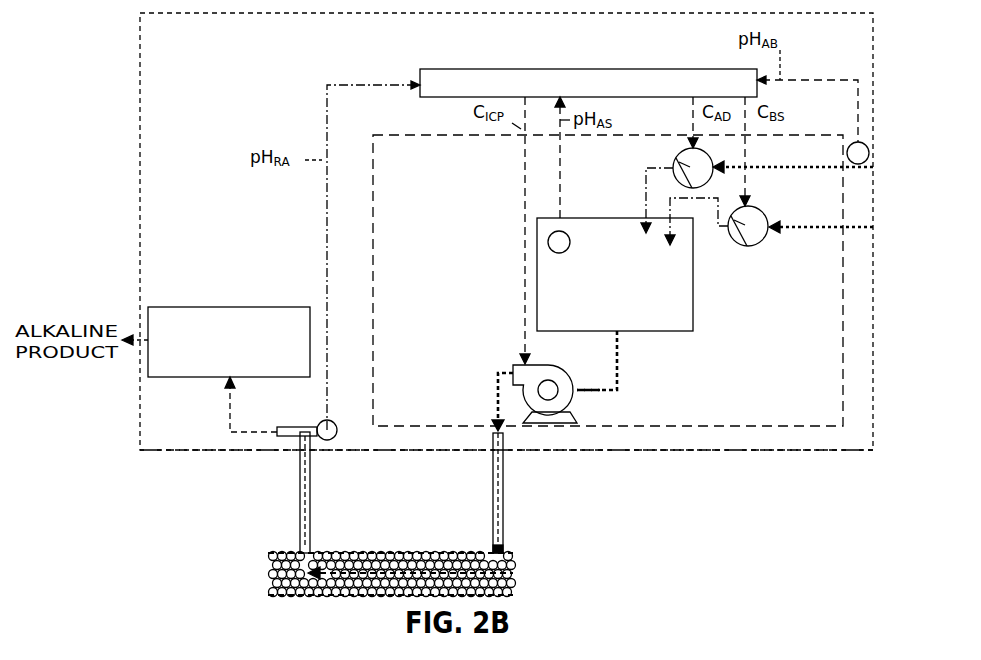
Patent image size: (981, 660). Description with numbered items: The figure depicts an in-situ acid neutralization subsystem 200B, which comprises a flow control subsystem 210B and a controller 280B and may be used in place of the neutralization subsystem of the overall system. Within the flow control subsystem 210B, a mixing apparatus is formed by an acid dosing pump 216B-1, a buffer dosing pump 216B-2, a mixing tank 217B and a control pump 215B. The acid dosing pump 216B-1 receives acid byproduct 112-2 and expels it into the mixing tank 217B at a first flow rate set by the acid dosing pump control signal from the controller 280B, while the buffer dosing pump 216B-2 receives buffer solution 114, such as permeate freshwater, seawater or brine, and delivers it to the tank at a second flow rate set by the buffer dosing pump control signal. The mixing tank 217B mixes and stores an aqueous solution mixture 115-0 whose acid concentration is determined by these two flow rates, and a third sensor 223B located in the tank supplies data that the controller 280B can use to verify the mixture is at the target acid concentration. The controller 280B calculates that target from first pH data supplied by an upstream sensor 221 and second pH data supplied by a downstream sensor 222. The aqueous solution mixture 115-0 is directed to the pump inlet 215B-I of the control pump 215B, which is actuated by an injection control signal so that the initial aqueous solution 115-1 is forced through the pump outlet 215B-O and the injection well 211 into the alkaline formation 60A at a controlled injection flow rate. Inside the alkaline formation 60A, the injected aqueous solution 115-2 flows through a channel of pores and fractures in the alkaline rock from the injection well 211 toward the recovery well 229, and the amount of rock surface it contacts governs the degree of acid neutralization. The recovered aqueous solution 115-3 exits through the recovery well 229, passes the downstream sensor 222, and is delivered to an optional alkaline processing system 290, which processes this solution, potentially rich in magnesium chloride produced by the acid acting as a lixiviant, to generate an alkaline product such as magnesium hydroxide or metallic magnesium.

The in-situ acid neutralization subsystem 200B is at (598, 63).
The controller 280B is at (695, 94).
The flow control subsystem (FCSS) 210B is at (455, 212).
The mixing tank 217B is at (590, 311).
The third sensor 223B is at (567, 232).
The acid dosing pump 216B-1 is at (677, 163).
The buffer dosing pump 216B-2 is at (758, 245).
The upstream sensor 221 is at (870, 151).
The acid byproduct 112-2 is at (821, 169).
The buffer solution 114 is at (845, 226).
The control pump 215B is at (580, 360).
The pump outlet 215B-O is at (513, 370).
The pump inlet 215B-I is at (585, 393).
The aqueous solution mixture 115-0 is at (620, 380).
The initial aqueous solution 115-1 is at (495, 410).
The injection well 211 is at (505, 488).
The recovery well 229 is at (300, 476).
The downstream sensor 222 is at (335, 441).
The recovered aqueous solution 115-3 is at (254, 430).
The alkaline processing system 290 is at (295, 368).
The injected aqueous solution 115-2 is at (405, 552).
The alkaline formation 60A is at (262, 558).